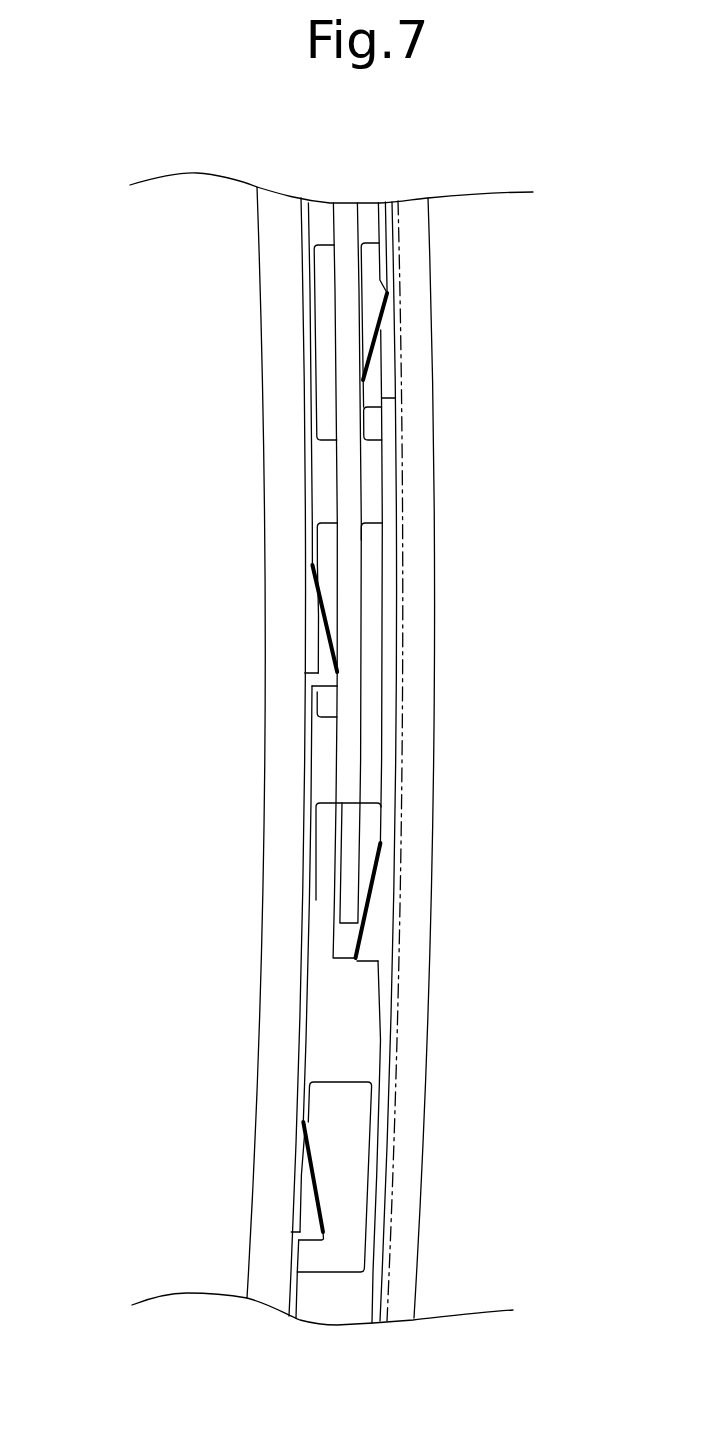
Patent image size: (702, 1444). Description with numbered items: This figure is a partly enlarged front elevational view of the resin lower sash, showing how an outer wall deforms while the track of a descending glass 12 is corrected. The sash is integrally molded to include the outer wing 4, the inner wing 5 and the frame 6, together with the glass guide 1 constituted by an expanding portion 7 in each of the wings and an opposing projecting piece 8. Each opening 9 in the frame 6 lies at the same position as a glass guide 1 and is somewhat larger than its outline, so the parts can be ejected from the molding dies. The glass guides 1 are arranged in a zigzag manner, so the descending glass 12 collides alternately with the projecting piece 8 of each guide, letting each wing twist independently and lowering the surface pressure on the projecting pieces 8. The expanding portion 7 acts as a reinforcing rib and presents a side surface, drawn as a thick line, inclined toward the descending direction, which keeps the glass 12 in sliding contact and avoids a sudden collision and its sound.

The glass guide 1 is at (306, 599).
The outer wing 4 is at (386, 1013).
The inner wing 5 is at (292, 1043).
The frame 6 is at (270, 1222).
The expanding portion 7 is at (311, 653).
The projecting piece 8 is at (328, 677).
The opening 9 is at (347, 1163).
The glass 12 is at (343, 303).